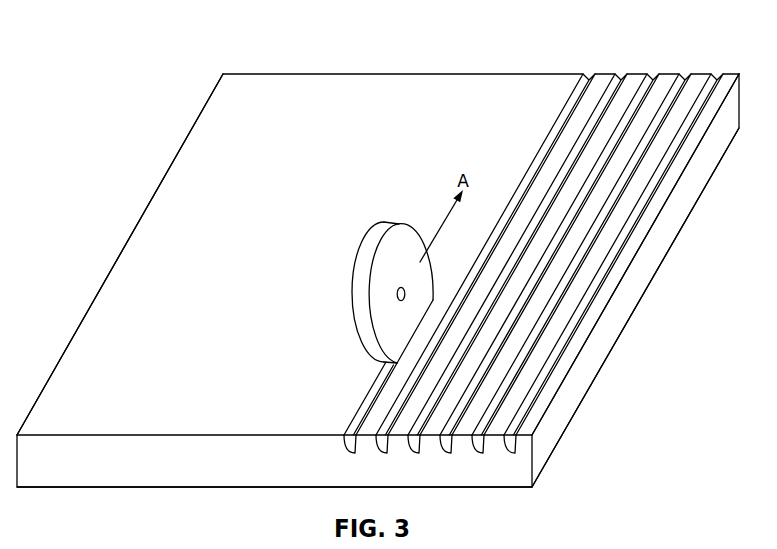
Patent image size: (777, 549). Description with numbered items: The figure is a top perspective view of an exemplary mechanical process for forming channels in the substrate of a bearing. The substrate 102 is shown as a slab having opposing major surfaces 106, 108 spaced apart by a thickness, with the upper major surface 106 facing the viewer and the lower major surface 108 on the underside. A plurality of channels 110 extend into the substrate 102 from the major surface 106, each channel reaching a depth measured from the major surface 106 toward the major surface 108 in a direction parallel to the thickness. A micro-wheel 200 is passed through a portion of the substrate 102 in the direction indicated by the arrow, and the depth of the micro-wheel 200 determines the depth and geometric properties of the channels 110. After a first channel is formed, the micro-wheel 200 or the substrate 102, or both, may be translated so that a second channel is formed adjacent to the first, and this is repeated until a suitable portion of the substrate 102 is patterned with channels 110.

The substrate 102 is at (450, 73).
The major surface 106 is at (298, 149).
The major surface 108 is at (178, 491).
The channels 110 is at (652, 75).
The micro-wheel 200 is at (353, 271).